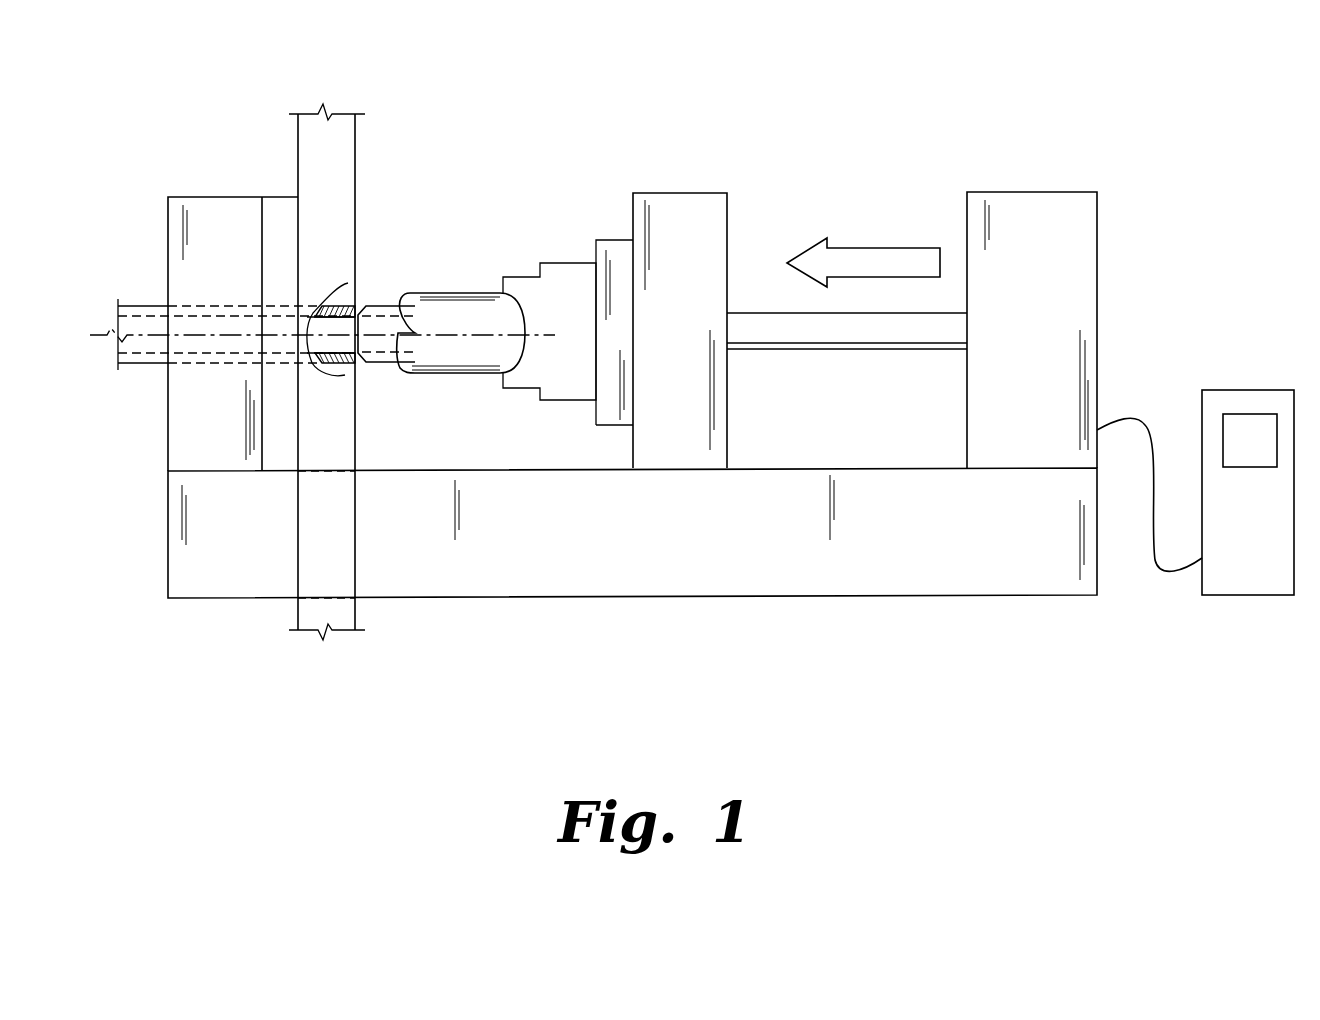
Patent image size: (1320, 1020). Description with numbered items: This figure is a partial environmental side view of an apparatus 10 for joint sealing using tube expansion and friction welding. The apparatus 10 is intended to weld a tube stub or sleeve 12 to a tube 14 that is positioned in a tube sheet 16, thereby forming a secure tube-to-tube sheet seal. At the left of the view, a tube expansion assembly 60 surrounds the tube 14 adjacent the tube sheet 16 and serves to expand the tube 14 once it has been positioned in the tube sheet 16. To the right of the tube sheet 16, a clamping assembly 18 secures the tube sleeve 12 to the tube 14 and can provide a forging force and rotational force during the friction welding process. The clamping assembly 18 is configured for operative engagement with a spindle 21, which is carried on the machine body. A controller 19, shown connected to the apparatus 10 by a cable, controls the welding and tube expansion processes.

The apparatus for joint sealing using tube expansion and friction welding 10 is at (725, 118).
The tube stub or sleeve 12 is at (383, 304).
The tube 14 is at (348, 285).
The tube sheet 16 is at (355, 168).
The clamping assembly 18 is at (520, 390).
The controller 19 is at (1197, 608).
The spindle 21 is at (510, 291).
The tube expansion assembly 60 is at (198, 197).